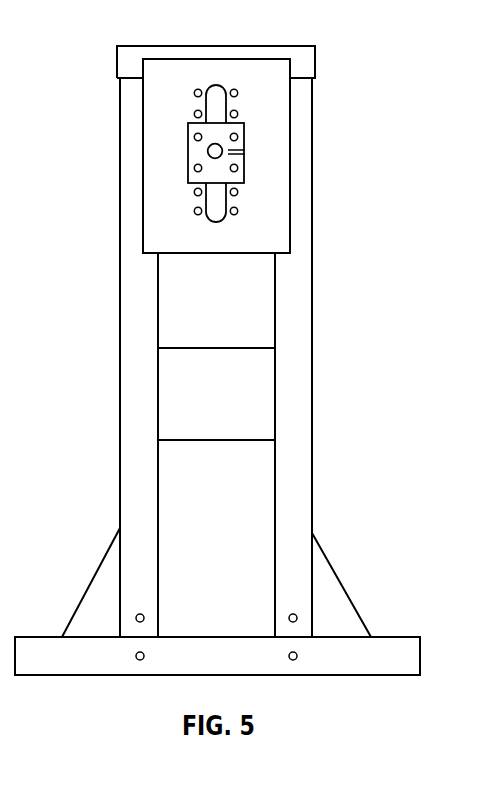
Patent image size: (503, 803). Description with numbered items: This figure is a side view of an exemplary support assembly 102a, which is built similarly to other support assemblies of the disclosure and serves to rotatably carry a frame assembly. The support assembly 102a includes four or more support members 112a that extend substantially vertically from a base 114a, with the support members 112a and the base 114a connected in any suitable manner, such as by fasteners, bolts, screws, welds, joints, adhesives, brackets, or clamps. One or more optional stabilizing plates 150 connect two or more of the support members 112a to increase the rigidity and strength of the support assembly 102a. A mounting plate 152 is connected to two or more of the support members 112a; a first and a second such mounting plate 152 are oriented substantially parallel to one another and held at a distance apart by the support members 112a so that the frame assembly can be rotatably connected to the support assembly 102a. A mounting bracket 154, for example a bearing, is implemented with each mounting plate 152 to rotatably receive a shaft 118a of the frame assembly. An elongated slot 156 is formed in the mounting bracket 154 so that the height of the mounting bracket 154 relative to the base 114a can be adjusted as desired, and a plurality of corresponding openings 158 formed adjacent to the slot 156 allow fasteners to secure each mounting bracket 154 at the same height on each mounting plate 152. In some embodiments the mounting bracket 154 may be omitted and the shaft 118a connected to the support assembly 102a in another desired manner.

The support assembly 102a is at (329, 81).
The support members 112a is at (120, 402).
The base 114a is at (393, 637).
The stabilizing plates 150 is at (207, 348).
The mounting plate 152 is at (291, 115).
The mounting bracket 154 is at (244, 156).
The elongated slot 156 is at (221, 97).
The openings 158 is at (236, 88).
The shaft 118a is at (210, 150).